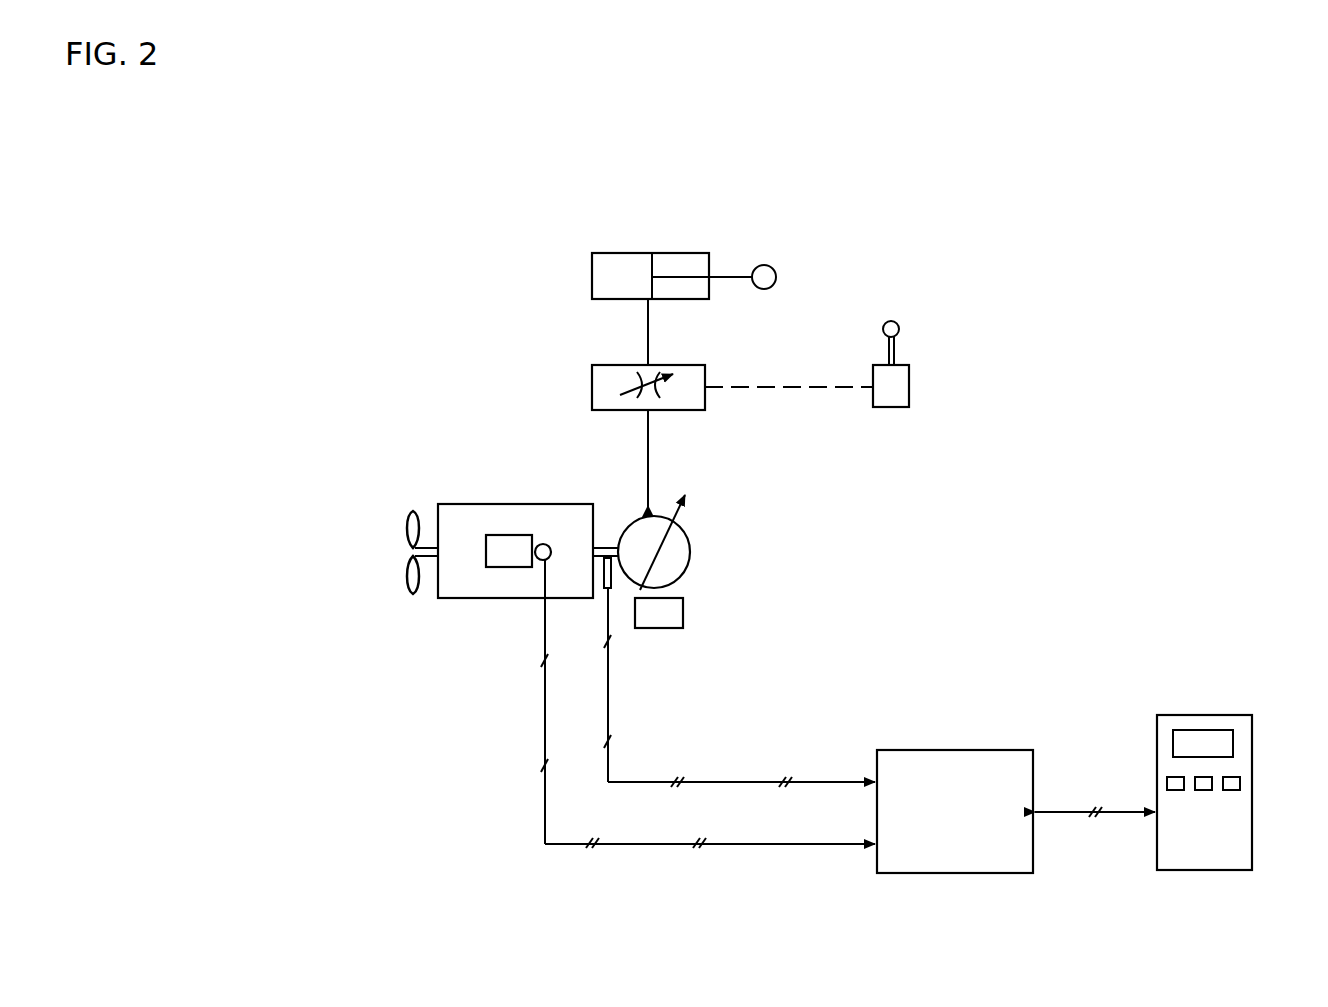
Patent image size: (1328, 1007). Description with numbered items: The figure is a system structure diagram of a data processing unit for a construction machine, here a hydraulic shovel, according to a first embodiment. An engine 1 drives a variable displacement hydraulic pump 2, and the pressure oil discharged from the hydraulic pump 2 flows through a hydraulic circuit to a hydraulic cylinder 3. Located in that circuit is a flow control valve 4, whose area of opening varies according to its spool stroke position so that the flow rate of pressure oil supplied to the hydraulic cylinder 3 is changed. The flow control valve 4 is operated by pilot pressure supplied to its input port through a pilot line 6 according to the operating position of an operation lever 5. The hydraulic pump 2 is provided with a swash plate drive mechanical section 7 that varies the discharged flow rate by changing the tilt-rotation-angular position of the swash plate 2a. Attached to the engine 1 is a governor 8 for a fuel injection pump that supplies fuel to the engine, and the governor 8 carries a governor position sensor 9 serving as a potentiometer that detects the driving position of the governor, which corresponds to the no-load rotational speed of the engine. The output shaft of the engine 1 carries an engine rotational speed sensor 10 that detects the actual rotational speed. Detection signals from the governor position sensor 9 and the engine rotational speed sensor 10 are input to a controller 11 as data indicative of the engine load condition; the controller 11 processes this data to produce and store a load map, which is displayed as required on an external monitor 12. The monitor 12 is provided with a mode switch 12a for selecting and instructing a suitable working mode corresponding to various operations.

The engine 1 is at (450, 504).
The variable displacement hydraulic pump 2 is at (690, 548).
The swash plate 2a is at (653, 563).
The hydraulic cylinder 3 is at (600, 253).
The flow control valve 4 is at (592, 365).
The operation lever 5 is at (910, 378).
The pilot line 6 is at (765, 387).
The swash plate drive mechanical section 7 is at (676, 628).
The governor 8 is at (490, 567).
The governor position sensor 9 is at (547, 544).
The engine rotational speed sensor 10 is at (607, 591).
The controller 11 is at (960, 750).
The monitor 12 is at (1208, 870).
The mode switch 12a is at (1238, 777).